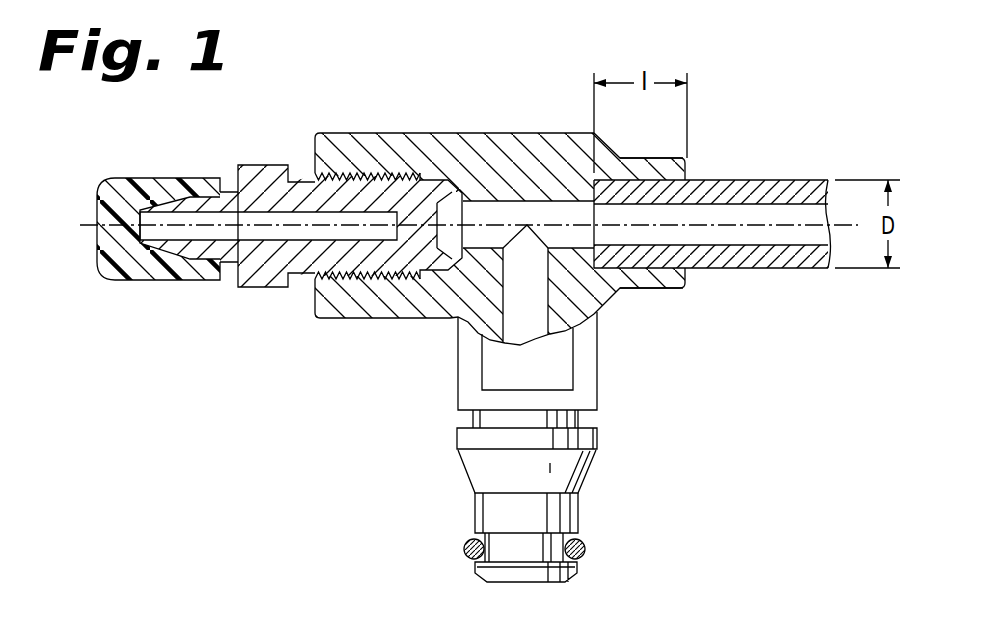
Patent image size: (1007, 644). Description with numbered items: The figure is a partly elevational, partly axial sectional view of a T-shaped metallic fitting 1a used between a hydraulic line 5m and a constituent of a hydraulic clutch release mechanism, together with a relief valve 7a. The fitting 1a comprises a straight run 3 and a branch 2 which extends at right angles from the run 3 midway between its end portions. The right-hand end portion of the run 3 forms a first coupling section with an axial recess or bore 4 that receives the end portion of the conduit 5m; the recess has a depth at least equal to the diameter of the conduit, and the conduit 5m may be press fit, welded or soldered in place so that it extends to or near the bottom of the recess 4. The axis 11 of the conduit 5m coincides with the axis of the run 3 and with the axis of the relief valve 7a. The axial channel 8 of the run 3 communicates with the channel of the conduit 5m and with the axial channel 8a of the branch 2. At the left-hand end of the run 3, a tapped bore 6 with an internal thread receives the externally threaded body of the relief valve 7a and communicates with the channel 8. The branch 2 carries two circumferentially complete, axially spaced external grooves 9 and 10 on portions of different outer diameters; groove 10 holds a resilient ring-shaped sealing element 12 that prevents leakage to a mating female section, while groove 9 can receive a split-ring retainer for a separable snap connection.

The T-shaped metallic fitting 1a is at (456, 122).
The branch 2 is at (600, 470).
The run 3 is at (363, 132).
The axial recess or bore 4 is at (661, 257).
The hydraulic line 5m is at (802, 183).
The tapped bore 6 is at (350, 290).
The relief valve 7a is at (232, 292).
The axial channel 8 is at (545, 210).
The axial channel of the branch 8a is at (540, 316).
The external groove 9 is at (585, 418).
The external groove 10 is at (552, 546).
The axis 11 is at (723, 222).
The ring-shaped sealing element 12 is at (580, 557).